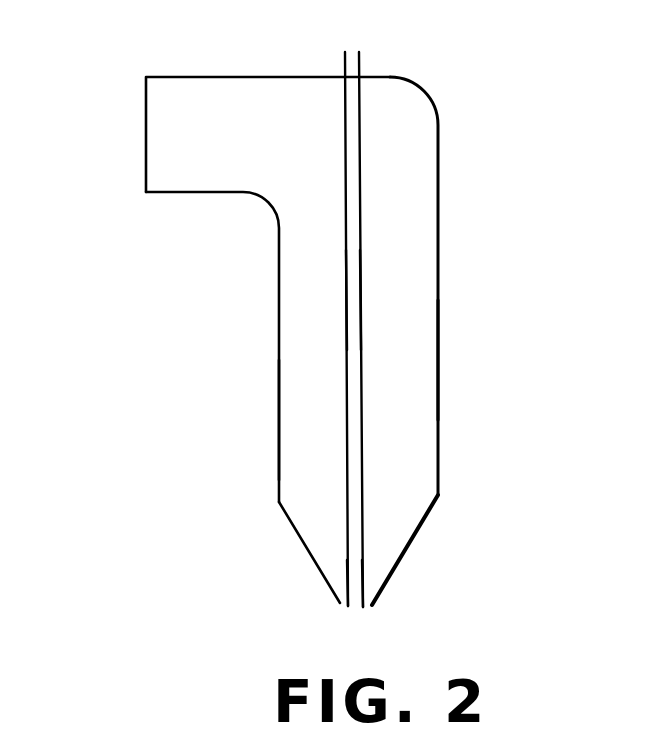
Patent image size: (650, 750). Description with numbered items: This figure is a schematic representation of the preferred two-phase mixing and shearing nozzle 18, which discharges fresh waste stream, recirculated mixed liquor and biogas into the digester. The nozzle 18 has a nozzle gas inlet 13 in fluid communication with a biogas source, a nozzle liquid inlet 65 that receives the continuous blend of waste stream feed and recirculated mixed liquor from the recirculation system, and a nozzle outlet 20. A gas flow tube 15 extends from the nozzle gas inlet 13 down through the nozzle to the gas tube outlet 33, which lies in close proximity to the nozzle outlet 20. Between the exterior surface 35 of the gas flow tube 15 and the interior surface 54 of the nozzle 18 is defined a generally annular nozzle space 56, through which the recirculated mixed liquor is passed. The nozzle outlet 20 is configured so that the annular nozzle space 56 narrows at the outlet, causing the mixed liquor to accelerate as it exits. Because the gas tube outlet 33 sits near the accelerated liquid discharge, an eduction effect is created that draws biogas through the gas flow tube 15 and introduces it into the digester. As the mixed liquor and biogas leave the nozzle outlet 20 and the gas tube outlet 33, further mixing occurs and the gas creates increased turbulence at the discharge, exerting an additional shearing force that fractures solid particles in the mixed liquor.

The nozzle gas inlet 13 is at (352, 49).
The gas flow tube 15 is at (353, 170).
The two-phase nozzle 18 is at (279, 338).
The nozzle outlet 20 is at (364, 610).
The gas tube outlet 33 is at (355, 610).
The exterior surface of the gas flow tube 35 is at (346, 300).
The interior surface of the nozzle 54 is at (280, 412).
The nozzle space 56 is at (410, 373).
The nozzle liquid inlet 65 is at (146, 135).